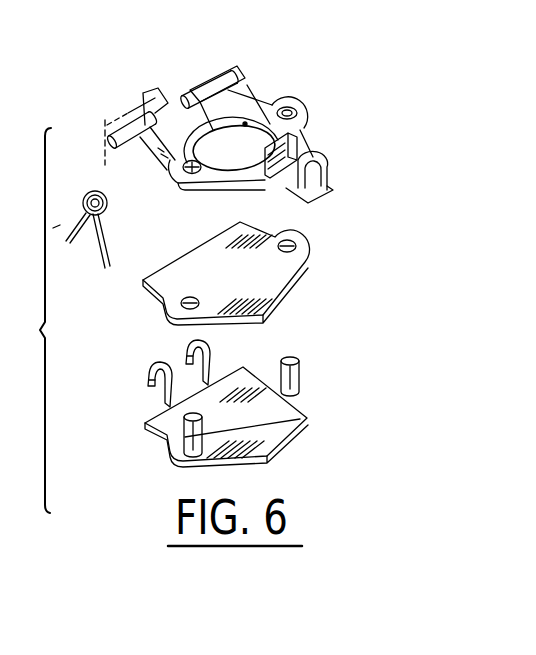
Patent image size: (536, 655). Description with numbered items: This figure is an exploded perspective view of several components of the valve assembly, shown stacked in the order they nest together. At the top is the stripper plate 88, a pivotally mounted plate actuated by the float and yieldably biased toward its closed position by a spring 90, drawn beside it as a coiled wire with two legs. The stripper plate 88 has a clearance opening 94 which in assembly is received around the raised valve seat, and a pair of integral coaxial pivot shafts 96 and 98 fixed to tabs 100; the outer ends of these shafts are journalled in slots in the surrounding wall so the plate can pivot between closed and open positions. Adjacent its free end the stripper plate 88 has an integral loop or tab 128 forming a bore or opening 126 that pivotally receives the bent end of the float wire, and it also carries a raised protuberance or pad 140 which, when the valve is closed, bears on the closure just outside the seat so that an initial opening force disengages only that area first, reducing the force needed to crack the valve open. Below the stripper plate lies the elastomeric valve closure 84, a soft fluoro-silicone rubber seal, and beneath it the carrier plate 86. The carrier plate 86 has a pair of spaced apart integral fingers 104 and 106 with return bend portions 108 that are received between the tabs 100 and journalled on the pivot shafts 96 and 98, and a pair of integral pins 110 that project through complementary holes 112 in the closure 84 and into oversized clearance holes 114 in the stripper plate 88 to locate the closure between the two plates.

The elastomeric valve closure 84 is at (270, 273).
The carrier plate 86 is at (247, 394).
The stripper plate 88 is at (252, 127).
The spring 90 is at (102, 250).
The clearance opening 94 is at (245, 124).
The pivot shaft 96 is at (150, 110).
The pivot shaft 98 is at (190, 86).
The tabs 100 is at (222, 90).
The finger 104 is at (165, 397).
The finger 106 is at (218, 377).
The return bend portions 108 is at (162, 362).
The integral pins 110 is at (205, 430).
The holes 112 is at (287, 248).
The oversized clearance holes 114 is at (300, 100).
The bore or opening 126 is at (290, 180).
The integral loop or tab 128 is at (313, 157).
The raised protuberance or pad 140 is at (289, 134).